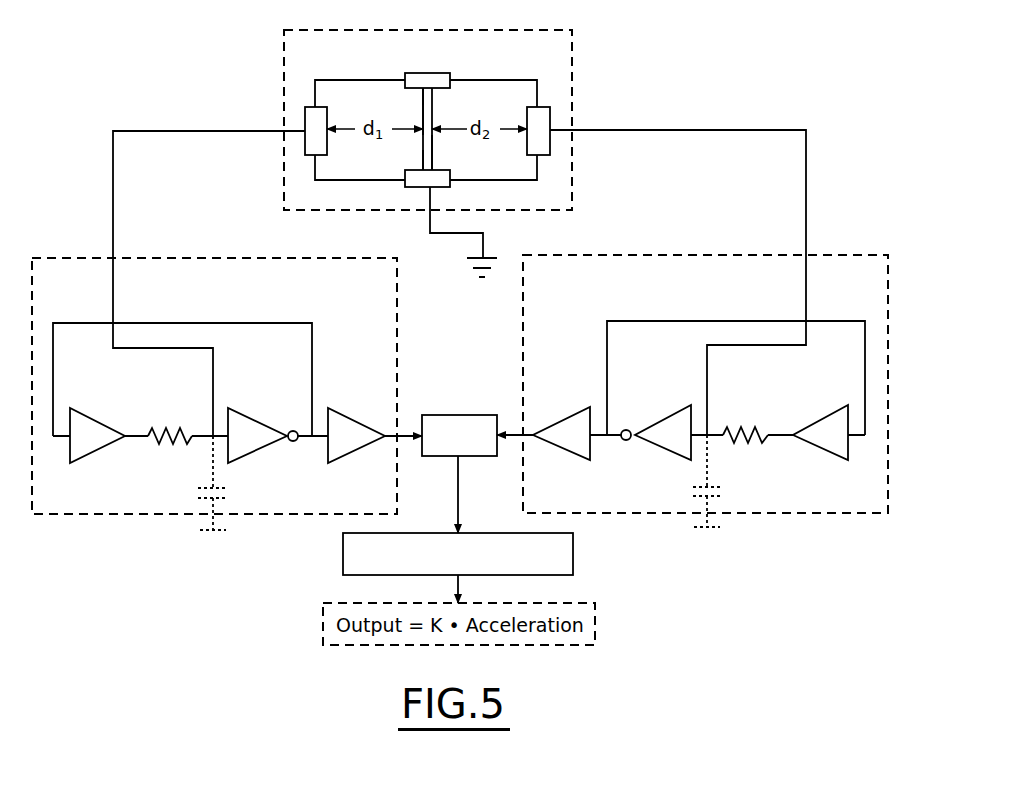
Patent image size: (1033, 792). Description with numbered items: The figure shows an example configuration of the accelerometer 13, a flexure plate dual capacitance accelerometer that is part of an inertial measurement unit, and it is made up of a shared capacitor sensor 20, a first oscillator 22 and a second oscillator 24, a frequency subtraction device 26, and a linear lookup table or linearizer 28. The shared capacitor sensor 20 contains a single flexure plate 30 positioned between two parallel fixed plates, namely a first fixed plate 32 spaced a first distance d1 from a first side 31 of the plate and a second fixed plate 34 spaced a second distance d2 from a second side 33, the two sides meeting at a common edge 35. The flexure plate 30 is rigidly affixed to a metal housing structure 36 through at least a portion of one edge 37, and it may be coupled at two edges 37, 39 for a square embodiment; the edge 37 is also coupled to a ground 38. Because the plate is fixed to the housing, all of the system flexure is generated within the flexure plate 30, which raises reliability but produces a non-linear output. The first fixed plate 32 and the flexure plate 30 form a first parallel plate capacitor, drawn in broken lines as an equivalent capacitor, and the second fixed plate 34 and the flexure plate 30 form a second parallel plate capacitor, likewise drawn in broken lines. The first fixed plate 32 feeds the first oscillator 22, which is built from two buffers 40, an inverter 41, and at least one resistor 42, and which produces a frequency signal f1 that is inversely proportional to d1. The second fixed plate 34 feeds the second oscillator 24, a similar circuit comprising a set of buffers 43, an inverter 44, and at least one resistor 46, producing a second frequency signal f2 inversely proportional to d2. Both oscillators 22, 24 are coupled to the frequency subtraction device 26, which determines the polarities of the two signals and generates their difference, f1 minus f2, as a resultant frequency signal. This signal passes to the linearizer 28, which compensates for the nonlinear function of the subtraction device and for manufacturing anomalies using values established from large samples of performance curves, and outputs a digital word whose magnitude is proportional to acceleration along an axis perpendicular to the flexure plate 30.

The accelerometer 13 is at (714, 31).
The shared capacitor sensor 20 is at (574, 38).
The first oscillator 22 is at (234, 257).
The second oscillator 24 is at (733, 253).
The frequency subtraction device 26 is at (457, 413).
The linear lookup table 28 is at (575, 555).
The flexure plate 30 is at (432, 100).
The first side 31 is at (423, 117).
The first fixed plate 32 is at (305, 113).
The second side 33 is at (432, 153).
The second fixed plate 34 is at (573, 106).
The common edge 35 is at (423, 96).
The metal housing structure 36 is at (413, 168).
The edge 37 is at (450, 74).
The ground 38 is at (497, 255).
The second edge 39 is at (452, 186).
The buffers 40 is at (107, 400).
The inverter 41 is at (253, 417).
The resistor 42 is at (168, 425).
The buffers 43 is at (573, 412).
The inverter 44 is at (668, 415).
The resistor 46 is at (745, 425).